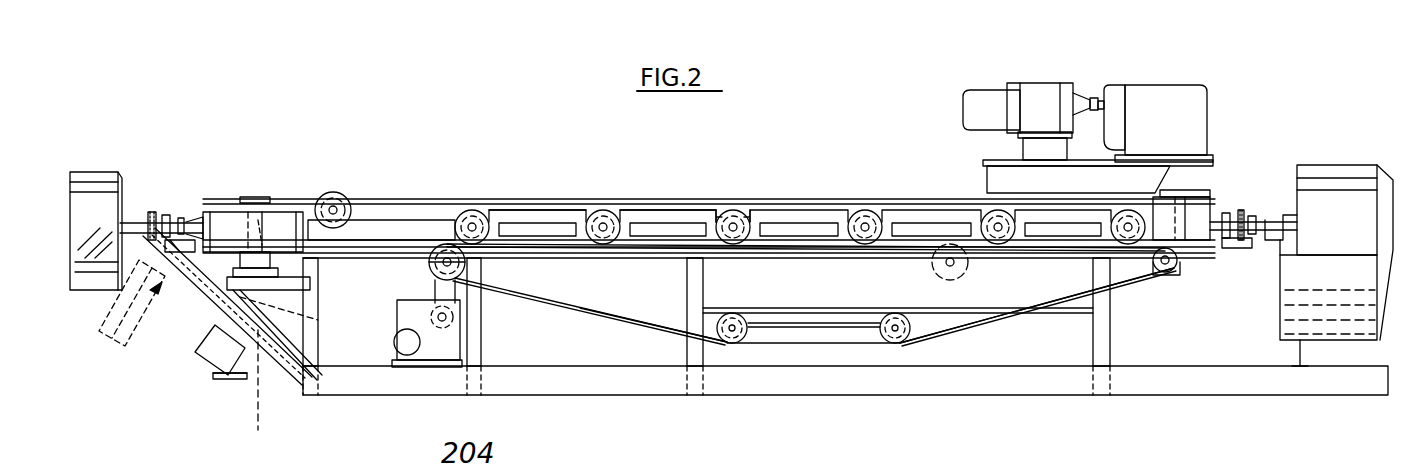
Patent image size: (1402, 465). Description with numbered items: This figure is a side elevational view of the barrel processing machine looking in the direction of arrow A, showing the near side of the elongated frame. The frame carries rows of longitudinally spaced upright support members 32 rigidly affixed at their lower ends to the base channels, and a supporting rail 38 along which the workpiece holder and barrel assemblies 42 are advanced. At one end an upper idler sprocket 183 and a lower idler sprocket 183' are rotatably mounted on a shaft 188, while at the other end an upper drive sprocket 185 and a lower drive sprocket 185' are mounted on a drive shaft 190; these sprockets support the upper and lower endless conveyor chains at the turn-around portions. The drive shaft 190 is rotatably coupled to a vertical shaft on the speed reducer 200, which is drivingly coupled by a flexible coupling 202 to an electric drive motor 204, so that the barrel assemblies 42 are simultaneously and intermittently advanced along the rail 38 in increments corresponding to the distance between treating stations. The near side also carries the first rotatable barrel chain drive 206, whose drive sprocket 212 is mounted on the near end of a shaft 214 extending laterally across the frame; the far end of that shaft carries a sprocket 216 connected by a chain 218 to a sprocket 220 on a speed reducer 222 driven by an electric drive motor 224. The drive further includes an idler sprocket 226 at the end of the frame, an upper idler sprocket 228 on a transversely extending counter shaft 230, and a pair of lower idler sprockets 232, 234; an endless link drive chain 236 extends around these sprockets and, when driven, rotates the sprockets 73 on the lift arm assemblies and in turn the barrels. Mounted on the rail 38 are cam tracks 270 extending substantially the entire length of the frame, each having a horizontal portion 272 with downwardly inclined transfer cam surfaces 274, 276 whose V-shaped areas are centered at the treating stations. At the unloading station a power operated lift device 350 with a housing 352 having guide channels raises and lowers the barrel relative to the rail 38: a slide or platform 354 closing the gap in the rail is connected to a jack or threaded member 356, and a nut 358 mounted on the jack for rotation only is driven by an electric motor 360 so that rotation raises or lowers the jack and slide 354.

The upright support members 32 is at (482, 285).
The supporting rail 38 is at (178, 221).
The workpiece holder and barrel assemblies 42 is at (78, 172).
The sprockets 73 is at (333, 193).
The upper idler sprocket 183 is at (244, 207).
The lower idler sprocket 183' is at (219, 308).
The upper drive sprocket 185 is at (1225, 207).
The lower drive sprocket 185' is at (1254, 254).
The shaft 188 is at (275, 207).
The drive shaft 190 is at (1200, 180).
The speed reducer 200 is at (1182, 105).
The flexible coupling 202 is at (1095, 100).
The electric drive motor 204 is at (980, 108).
The first rotatable barrel chain drive 206 is at (580, 309).
The drive sprocket 212 is at (430, 263).
The shaft 214 is at (447, 243).
The sprocket 216 is at (470, 300).
The chain 218 is at (427, 293).
The sprocket 220 is at (445, 325).
The speed reducer 222 is at (395, 338).
The electric drive motor 224 is at (410, 348).
The idler sprocket 226 is at (1165, 268).
The upper idler sprocket 228 is at (970, 264).
The counter shaft 230 is at (945, 263).
The lower idler sprocket 232 is at (733, 335).
The lower idler sprocket 234 is at (895, 340).
The endless link drive chain 236 is at (658, 327).
The cam tracks 270 is at (553, 216).
The horizontal portion 272 is at (668, 220).
The transfer cam surface 274 is at (713, 222).
The transfer cam surface 276 is at (753, 222).
The power operated lift device 350 is at (120, 280).
The housing 352 is at (200, 340).
The slide or platform 354 is at (165, 212).
The jack or threaded member 356 is at (280, 310).
The nut 358 is at (277, 394).
The electric motor 360 is at (210, 355).